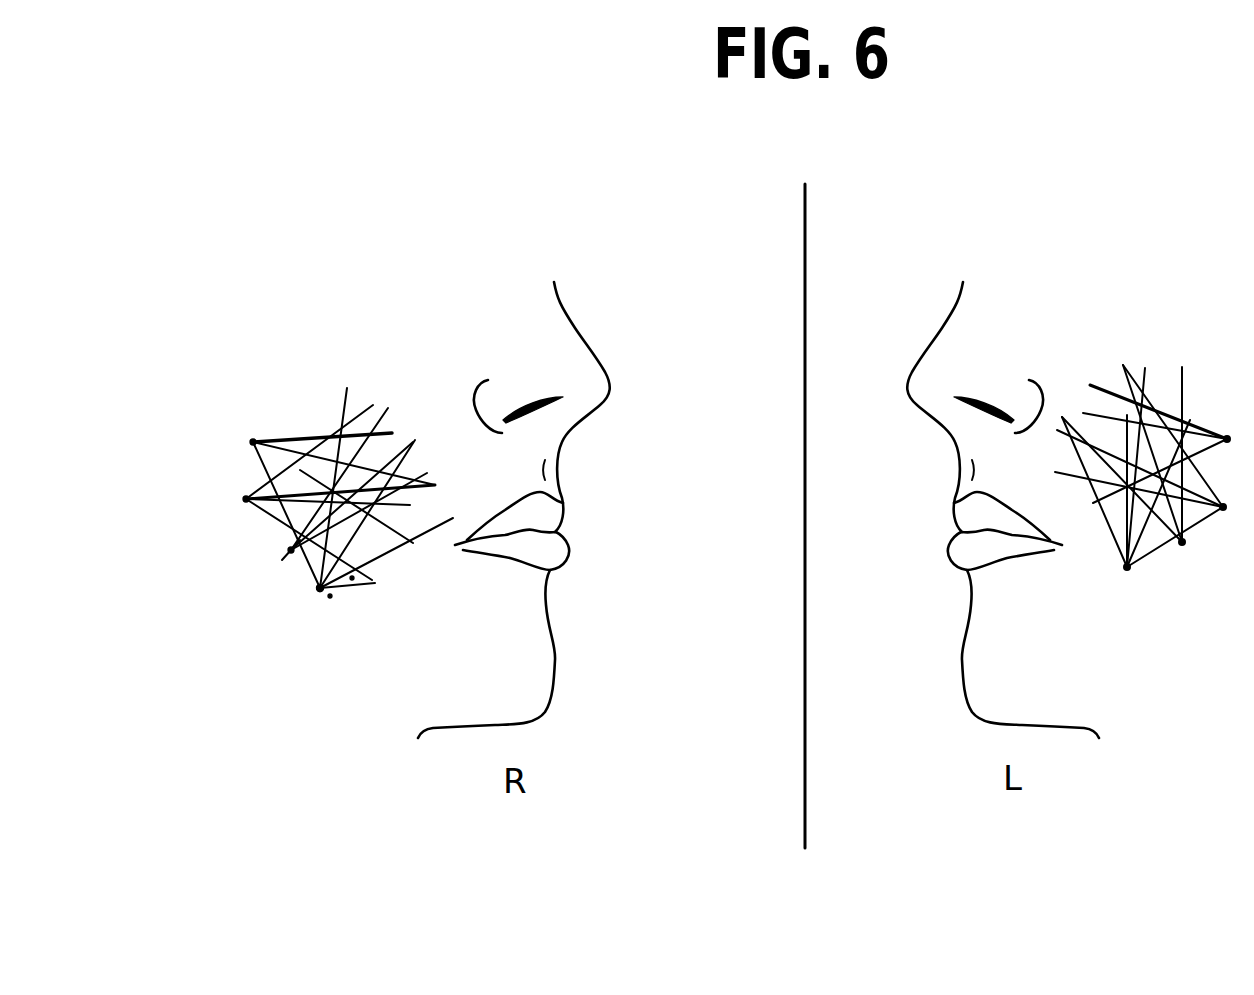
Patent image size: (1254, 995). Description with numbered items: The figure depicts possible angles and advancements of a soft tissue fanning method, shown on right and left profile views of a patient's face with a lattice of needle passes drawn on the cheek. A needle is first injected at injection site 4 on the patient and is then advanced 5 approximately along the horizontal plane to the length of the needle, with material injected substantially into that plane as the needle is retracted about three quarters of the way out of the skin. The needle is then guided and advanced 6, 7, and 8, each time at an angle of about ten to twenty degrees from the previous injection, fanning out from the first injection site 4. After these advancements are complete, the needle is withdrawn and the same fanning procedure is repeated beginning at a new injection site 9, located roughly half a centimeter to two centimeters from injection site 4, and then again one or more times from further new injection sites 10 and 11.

The injection site 4 is at (318, 592).
The needle advancement 5 is at (352, 578).
The needle advancement 6 is at (333, 595).
The needle advancement 7 is at (318, 589).
The needle advancement 8 is at (282, 560).
The new injection site 9 is at (288, 555).
The new injection site 10 is at (243, 502).
The new injection site 11 is at (247, 445).